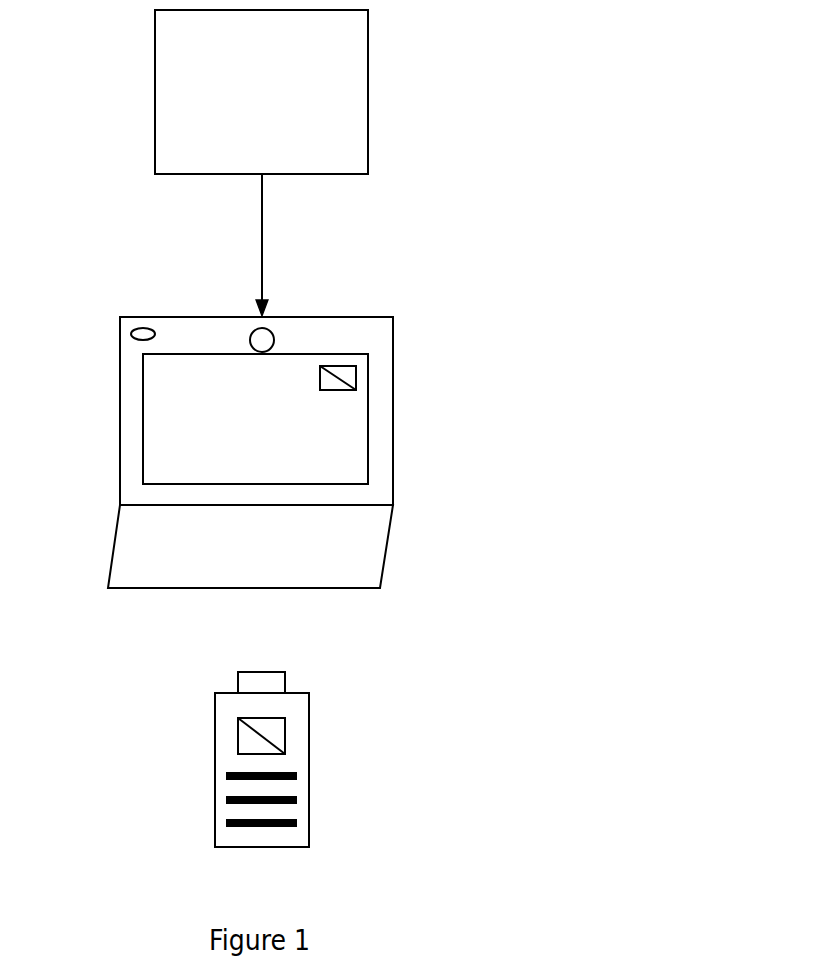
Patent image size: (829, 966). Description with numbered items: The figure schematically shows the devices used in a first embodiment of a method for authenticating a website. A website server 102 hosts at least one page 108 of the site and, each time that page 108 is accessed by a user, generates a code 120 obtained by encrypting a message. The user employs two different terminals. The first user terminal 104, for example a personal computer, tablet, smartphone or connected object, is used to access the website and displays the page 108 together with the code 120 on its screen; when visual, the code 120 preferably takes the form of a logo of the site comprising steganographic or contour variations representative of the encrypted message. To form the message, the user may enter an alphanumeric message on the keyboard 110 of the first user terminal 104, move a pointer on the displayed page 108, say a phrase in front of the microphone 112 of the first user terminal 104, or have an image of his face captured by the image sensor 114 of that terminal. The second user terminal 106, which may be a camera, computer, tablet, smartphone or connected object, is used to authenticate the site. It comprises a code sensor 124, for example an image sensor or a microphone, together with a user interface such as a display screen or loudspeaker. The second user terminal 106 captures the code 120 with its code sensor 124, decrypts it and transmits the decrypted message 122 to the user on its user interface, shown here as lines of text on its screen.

The website server 102 is at (356, 68).
The first user terminal 104 is at (132, 445).
The second user terminal 106 is at (296, 710).
The page 108 is at (354, 462).
The keyboard 110 is at (366, 567).
The microphone 112 is at (146, 336).
The image sensor 114 is at (263, 338).
The code 120 is at (355, 368).
The decrypted message 122 is at (238, 795).
The code sensor 124 is at (258, 683).